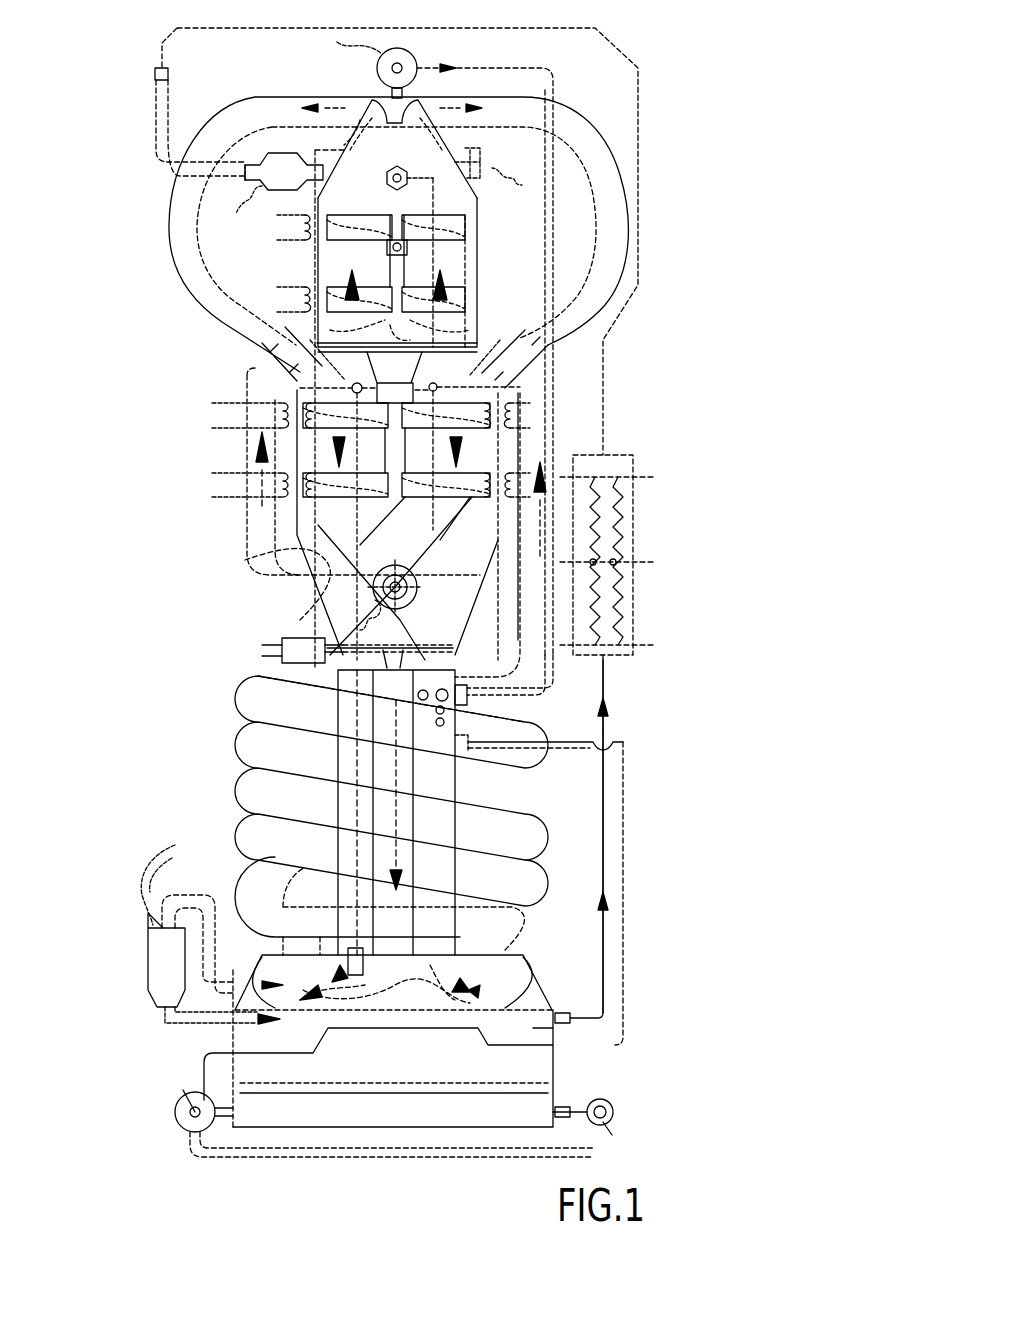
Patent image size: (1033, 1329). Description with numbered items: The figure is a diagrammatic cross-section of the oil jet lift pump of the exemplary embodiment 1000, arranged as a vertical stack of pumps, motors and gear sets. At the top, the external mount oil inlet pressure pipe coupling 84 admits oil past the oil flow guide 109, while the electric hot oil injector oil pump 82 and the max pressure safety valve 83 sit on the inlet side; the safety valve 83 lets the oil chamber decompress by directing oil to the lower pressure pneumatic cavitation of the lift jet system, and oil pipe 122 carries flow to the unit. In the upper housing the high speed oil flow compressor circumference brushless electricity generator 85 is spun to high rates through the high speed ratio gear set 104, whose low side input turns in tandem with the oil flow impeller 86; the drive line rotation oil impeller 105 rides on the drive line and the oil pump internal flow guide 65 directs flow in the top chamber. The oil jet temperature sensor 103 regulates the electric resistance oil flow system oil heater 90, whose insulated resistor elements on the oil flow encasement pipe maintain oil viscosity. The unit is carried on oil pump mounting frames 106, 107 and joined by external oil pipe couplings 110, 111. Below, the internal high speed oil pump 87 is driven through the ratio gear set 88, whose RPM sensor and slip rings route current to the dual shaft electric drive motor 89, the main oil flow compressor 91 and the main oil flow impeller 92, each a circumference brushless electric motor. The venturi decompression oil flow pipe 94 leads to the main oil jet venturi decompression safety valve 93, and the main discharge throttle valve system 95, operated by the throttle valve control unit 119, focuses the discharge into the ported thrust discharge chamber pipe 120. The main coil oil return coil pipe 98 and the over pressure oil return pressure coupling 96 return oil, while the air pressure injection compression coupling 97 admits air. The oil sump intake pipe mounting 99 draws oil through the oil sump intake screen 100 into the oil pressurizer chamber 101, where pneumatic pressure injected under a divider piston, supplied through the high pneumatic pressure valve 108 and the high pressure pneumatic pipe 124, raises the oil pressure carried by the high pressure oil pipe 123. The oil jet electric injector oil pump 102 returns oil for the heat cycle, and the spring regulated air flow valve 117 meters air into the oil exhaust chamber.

The energy system 1000 is at (700, 90).
The electric hot oil injector oil pump 82 is at (265, 158).
The max pressure safety valve 83 is at (417, 58).
The external mount oil inlet pressure pipe coupling 84 is at (385, 172).
The high speed oil flow compressor circumference brushless electricity generator 85 is at (460, 228).
The oil flow impeller 86 is at (465, 295).
The internal high speed oil pump 87 is at (413, 393).
The ratio gear set 88 is at (470, 428).
The dual shaft electric drive motor 89 is at (390, 450).
The electric resistance oil flow system oil heater 90 is at (620, 468).
The main oil flow compressor 91 is at (320, 418).
The main oil flow impeller 92 is at (300, 500).
The main oil jet venturi decompression safety valve 93 is at (376, 586).
The venturi decompression oil flow pipe 94 is at (270, 570).
The main discharge throttle valve system 95 is at (418, 636).
The over pressure oil return pressure coupling 96 is at (540, 708).
The air pressure injection compression coupling 97 is at (548, 748).
The main coil oil return coil pipe 98 is at (548, 657).
The oil sump oil pump oil intake pipe external mounting 99 is at (347, 803).
The oil sump intake screen 100 is at (370, 967).
The oil pressurizer chamber 101 is at (530, 1068).
The oil jet electric injector oil pump 102 is at (168, 945).
The oil jet temperature sensor 103 is at (465, 162).
The high speed ratio gear set 104 is at (395, 268).
The drive line rotation oil impeller 105 is at (408, 248).
The oil pump mounting frame 106 is at (290, 352).
The oil pump mounting frame 107 is at (280, 560).
The high pneumatic pressure valve 108 is at (613, 1112).
The oil flow guide 109 is at (390, 105).
The external oil pipe coupling 110 is at (352, 385).
The external oil pipe coupling 111 is at (520, 362).
The air flow valve 117 is at (180, 1105).
The throttle valve control unit 119 is at (292, 648).
The thrust discharge chamber pipe 120 is at (382, 763).
The oil pipe 122 is at (545, 122).
The high pressure oil pipe 123 is at (605, 835).
The high pressure pneumatic pipe 124 is at (622, 918).
The oil pump internal flow guide 65 is at (460, 316).